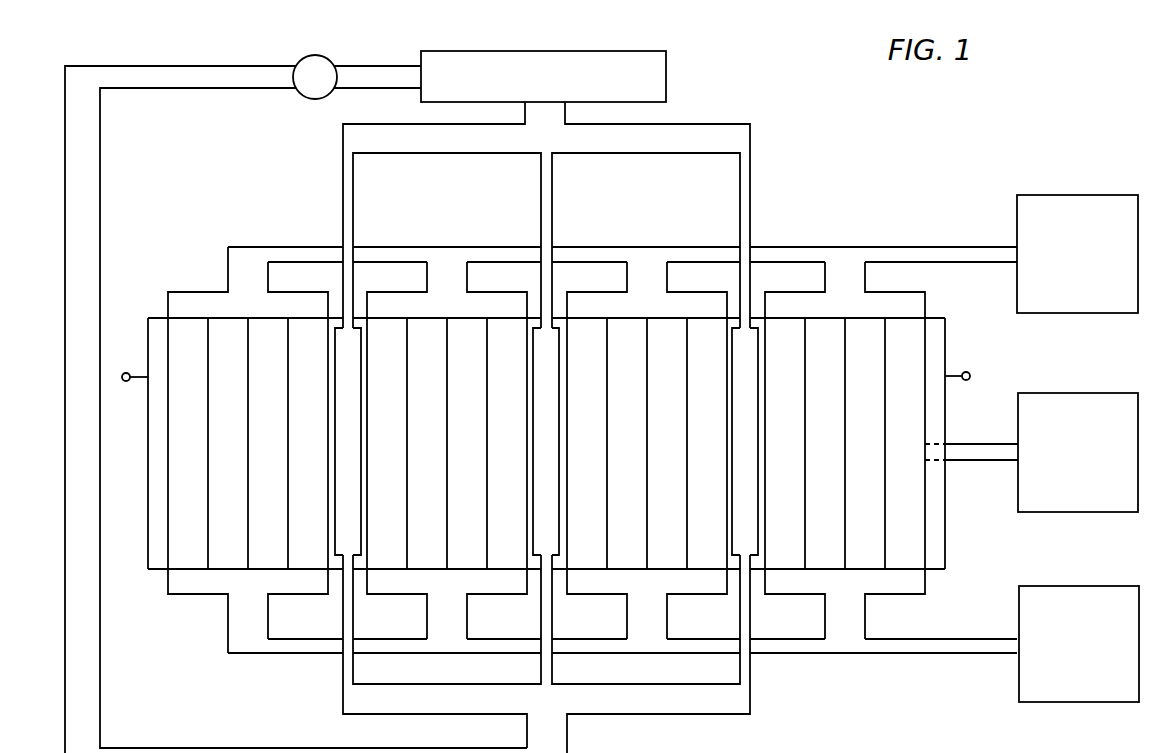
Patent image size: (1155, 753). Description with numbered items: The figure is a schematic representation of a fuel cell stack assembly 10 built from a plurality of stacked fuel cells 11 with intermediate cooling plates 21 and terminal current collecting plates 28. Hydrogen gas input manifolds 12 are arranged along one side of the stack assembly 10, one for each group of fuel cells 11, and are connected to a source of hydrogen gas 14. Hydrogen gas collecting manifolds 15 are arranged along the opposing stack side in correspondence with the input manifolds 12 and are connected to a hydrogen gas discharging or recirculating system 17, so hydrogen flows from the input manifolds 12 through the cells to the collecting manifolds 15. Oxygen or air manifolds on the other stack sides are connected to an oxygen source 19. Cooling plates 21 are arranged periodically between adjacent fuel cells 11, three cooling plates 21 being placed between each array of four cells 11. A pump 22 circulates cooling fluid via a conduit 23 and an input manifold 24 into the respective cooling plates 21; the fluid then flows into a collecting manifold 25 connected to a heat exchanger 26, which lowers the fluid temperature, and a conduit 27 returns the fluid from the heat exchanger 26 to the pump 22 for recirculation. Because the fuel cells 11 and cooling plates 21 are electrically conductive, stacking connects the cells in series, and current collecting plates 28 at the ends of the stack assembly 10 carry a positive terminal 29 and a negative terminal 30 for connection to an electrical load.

The fuel cell stack assembly 10 is at (790, 152).
The fuel cells 11 is at (228, 338).
The hydrogen gas input manifolds 12 is at (288, 292).
The source of hydrogen gas 14 is at (1066, 268).
The hydrogen gas collecting manifolds 15 is at (200, 596).
The hydrogen gas discharging or recirculating system 17 is at (1069, 656).
The oxygen source 19 is at (1067, 465).
The cooling plates 21 is at (357, 328).
The pump 22 is at (310, 56).
The conduit 23 is at (65, 413).
The input manifold 24 is at (749, 690).
The collecting manifold 25 is at (694, 124).
The heat exchanger 26 is at (666, 68).
The conduit 27 is at (376, 66).
The current collecting plates 28 is at (158, 328).
The positive terminal 29 is at (143, 372).
The negative terminal 30 is at (968, 373).